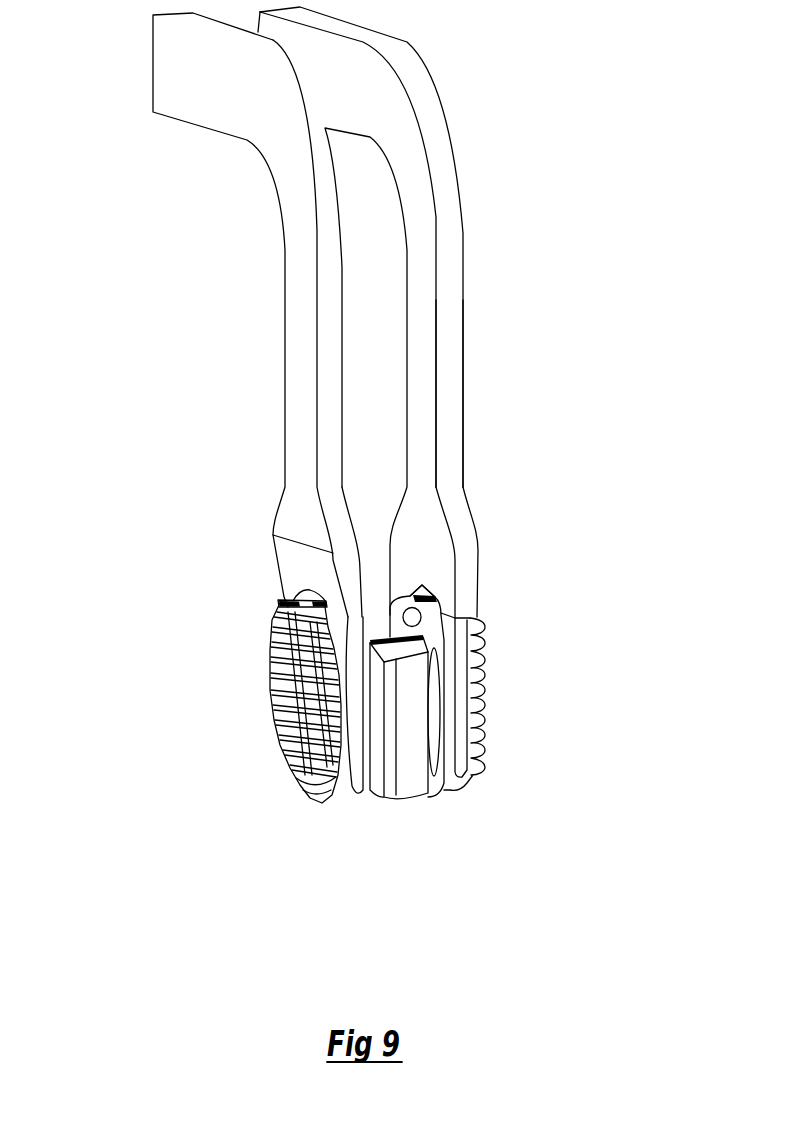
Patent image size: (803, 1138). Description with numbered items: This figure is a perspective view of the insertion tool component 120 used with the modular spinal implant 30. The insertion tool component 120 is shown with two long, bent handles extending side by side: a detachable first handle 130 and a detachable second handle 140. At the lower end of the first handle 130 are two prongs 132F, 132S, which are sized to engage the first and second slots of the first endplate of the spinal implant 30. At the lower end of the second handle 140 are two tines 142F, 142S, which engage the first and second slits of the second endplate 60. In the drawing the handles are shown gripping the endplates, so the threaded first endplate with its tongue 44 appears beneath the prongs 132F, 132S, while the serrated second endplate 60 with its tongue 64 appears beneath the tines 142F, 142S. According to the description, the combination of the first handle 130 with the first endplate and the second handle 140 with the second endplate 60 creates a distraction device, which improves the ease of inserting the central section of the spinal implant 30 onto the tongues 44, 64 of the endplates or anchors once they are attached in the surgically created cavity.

The modular spinal implant 30 is at (262, 677).
The tongue 44 is at (374, 785).
The second endplate 60 is at (497, 690).
The tongue 64 is at (325, 697).
The insertion tool component 120 is at (477, 276).
The first handle 130 is at (273, 250).
The second handle 140 is at (467, 431).
The first prong 132F is at (280, 596).
The second prong 132S is at (355, 757).
The first tine 142F is at (388, 605).
The second tine 142S is at (466, 736).